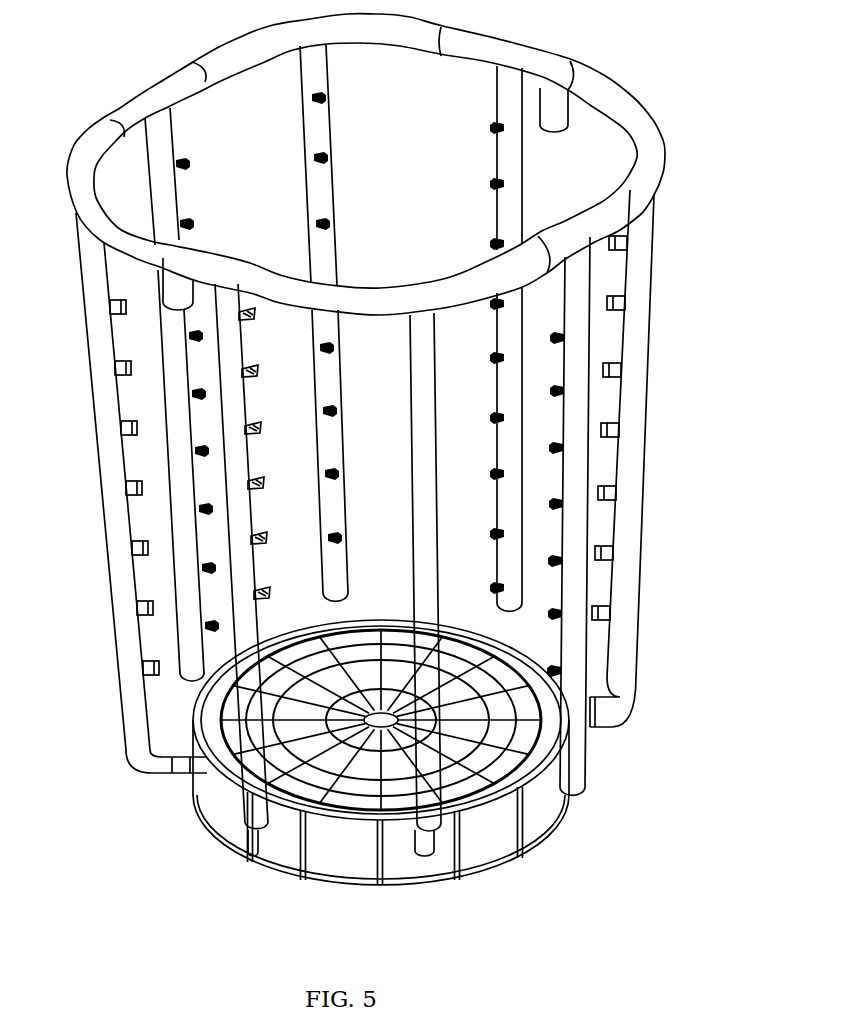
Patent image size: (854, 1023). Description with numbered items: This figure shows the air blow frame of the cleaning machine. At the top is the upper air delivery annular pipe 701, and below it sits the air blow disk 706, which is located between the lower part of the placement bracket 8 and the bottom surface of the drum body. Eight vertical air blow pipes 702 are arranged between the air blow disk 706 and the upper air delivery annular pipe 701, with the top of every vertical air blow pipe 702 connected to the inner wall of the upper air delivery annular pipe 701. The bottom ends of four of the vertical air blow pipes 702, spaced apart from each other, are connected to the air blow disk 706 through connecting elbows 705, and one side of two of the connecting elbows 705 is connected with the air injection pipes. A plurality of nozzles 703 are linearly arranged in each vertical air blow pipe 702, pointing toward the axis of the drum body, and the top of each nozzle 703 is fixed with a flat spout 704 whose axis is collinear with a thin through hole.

The upper air delivery annular pipe 701 is at (166, 91).
The vertical air blow pipe 702 is at (115, 566).
The nozzle 703 is at (125, 486).
The flat spout 704 is at (500, 413).
The connecting elbow 705 is at (158, 772).
The air blow disk 706 is at (340, 813).
The placement bracket 8 is at (532, 719).